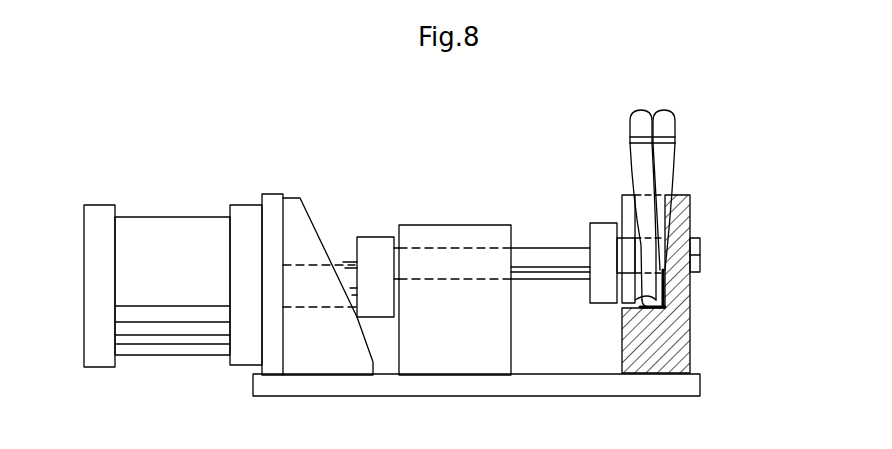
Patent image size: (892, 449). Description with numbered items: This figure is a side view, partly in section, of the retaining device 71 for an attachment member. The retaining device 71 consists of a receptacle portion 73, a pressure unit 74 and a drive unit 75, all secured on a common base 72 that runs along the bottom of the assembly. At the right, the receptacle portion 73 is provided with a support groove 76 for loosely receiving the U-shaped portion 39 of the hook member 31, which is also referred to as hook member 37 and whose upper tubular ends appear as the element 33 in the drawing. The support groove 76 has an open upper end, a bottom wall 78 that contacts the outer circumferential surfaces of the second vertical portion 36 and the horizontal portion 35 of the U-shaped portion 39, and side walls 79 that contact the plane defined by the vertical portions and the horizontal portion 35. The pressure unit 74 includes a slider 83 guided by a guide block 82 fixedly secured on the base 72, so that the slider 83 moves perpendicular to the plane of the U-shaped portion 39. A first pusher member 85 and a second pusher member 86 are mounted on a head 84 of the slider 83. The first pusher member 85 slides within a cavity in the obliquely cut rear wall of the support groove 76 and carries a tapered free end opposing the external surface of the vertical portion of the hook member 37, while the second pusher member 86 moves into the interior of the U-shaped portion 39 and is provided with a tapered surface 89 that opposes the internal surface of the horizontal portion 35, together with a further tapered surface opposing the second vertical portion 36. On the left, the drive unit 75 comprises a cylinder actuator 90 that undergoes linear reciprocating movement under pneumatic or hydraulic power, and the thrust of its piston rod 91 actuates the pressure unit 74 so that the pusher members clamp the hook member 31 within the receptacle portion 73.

The retaining device 71 is at (340, 146).
The base 72 is at (490, 396).
The receptacle portion 73 is at (693, 344).
The pressure unit 74 is at (522, 220).
The drive unit 75 is at (173, 266).
The support groove 76 is at (648, 235).
The bottom wall 78 is at (622, 314).
The side walls 79 is at (668, 277).
The guide block 82 is at (437, 225).
The slider 83 is at (541, 280).
The head 84 is at (590, 297).
The first pusher member 85 is at (696, 238).
The second pusher member 86 is at (701, 256).
The tapered surface 89 is at (660, 283).
The cylinder actuator 90 is at (190, 279).
The piston rod 91 is at (343, 262).
The hook member 31 is at (680, 178).
The first tube 33 is at (638, 112).
The horizontal portion 35 is at (673, 324).
The second vertical portion 36 is at (647, 263).
The hook member 37 is at (668, 112).
The U-shaped portion 39 is at (633, 292).